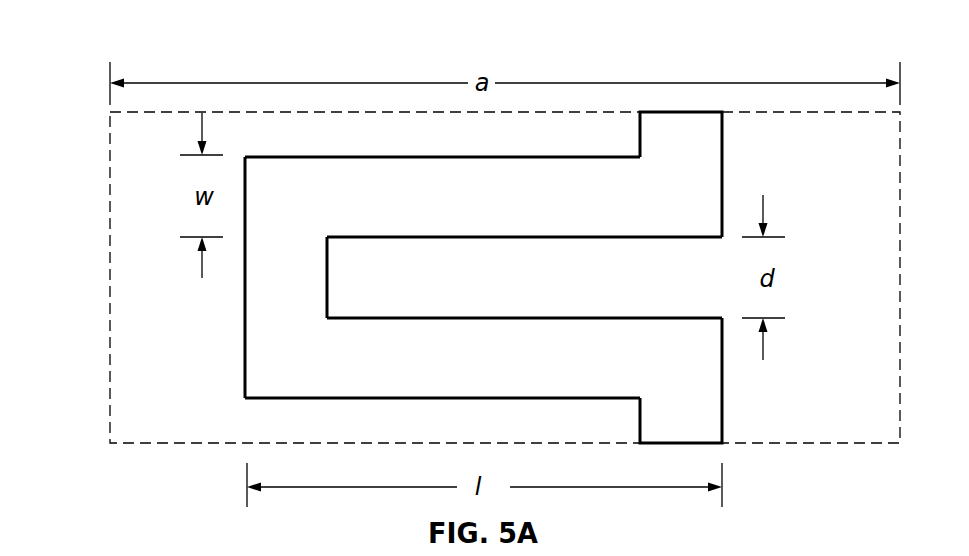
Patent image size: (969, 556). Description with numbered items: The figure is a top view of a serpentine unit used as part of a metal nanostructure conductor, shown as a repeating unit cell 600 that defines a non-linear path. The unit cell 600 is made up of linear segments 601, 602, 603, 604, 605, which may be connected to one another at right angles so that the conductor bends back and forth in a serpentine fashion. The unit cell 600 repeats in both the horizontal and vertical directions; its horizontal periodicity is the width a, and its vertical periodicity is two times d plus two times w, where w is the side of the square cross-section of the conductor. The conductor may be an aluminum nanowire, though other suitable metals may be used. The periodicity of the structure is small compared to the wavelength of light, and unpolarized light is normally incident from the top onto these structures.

The repeating unit cell 600 is at (344, 28).
The linear segment 601 is at (690, 137).
The linear segment 602 is at (303, 180).
The linear segment 603 is at (287, 273).
The linear segment 604 is at (463, 363).
The linear segment 605 is at (703, 415).